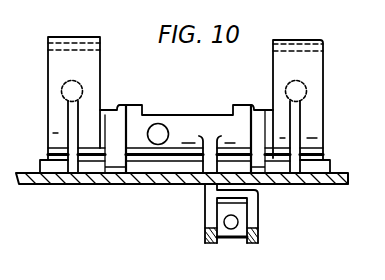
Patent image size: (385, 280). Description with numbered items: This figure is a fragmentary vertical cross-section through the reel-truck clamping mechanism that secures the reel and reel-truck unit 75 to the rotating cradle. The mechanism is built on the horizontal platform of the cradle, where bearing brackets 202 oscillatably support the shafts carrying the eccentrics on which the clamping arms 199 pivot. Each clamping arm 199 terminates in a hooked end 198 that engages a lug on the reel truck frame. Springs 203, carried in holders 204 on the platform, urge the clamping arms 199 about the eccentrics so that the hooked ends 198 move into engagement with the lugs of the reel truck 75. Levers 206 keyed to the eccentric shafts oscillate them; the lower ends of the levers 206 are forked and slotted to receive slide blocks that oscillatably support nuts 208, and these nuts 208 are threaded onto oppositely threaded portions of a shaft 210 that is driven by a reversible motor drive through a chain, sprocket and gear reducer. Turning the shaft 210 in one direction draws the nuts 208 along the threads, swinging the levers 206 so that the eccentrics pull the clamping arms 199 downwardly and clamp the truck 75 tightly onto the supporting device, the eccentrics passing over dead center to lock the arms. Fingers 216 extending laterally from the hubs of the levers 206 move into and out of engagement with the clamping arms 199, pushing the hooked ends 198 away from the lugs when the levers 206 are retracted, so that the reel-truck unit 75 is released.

The reel and reel-truck unit 75 is at (12, 19).
The hooked ends 198 is at (80, 36).
The clamping arms 199 is at (55, 70).
The bearing brackets 202 is at (115, 138).
The springs 203 is at (61, 92).
The holders 204 is at (68, 123).
The levers 206 is at (208, 193).
The nuts 208 is at (239, 238).
The shaft 210 is at (230, 224).
The fingers 216 is at (89, 99).